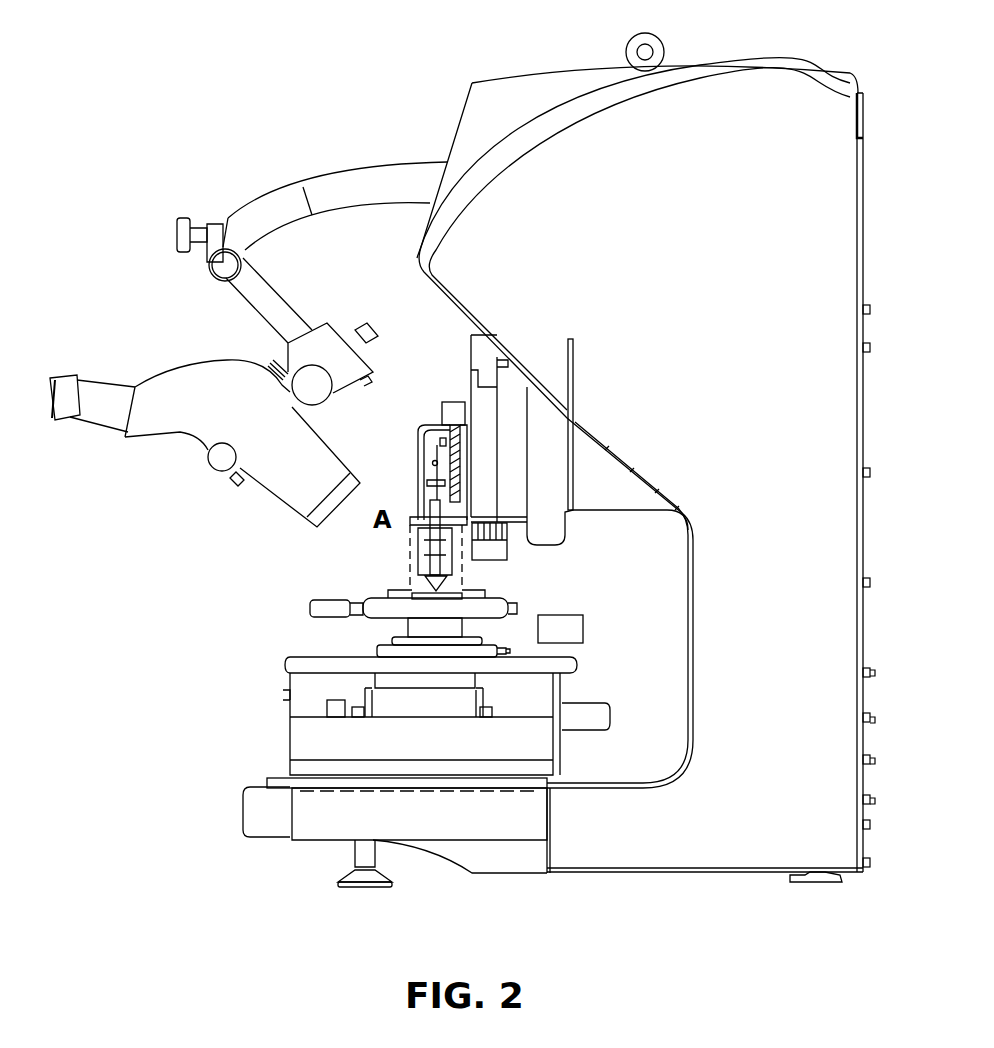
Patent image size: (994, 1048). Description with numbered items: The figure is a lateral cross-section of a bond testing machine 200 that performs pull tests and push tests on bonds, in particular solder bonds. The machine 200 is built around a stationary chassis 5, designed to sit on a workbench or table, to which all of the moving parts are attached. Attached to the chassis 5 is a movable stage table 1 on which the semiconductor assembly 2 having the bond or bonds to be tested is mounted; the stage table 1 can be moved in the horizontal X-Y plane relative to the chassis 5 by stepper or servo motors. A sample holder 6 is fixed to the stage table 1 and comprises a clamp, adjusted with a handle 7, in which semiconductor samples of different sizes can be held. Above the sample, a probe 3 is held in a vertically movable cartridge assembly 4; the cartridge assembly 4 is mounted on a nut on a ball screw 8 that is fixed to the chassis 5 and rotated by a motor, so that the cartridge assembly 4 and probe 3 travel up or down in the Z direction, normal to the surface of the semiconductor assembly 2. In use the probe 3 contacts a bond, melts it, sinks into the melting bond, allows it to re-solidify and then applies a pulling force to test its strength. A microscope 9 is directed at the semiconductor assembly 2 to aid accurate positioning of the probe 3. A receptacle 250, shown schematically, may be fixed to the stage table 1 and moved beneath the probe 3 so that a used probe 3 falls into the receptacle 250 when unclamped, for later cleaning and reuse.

The bond testing machine 200 is at (266, 128).
The stage table 1 is at (285, 665).
The semiconductor assembly 2 is at (462, 593).
The probe 3 is at (432, 592).
The cartridge assembly 4 is at (430, 452).
The chassis 5 is at (598, 873).
The sample holder 6 is at (385, 592).
The handle 7 is at (312, 608).
The ball screw 8 is at (470, 380).
The microscope 9 is at (213, 447).
The receptacle 250 is at (583, 625).